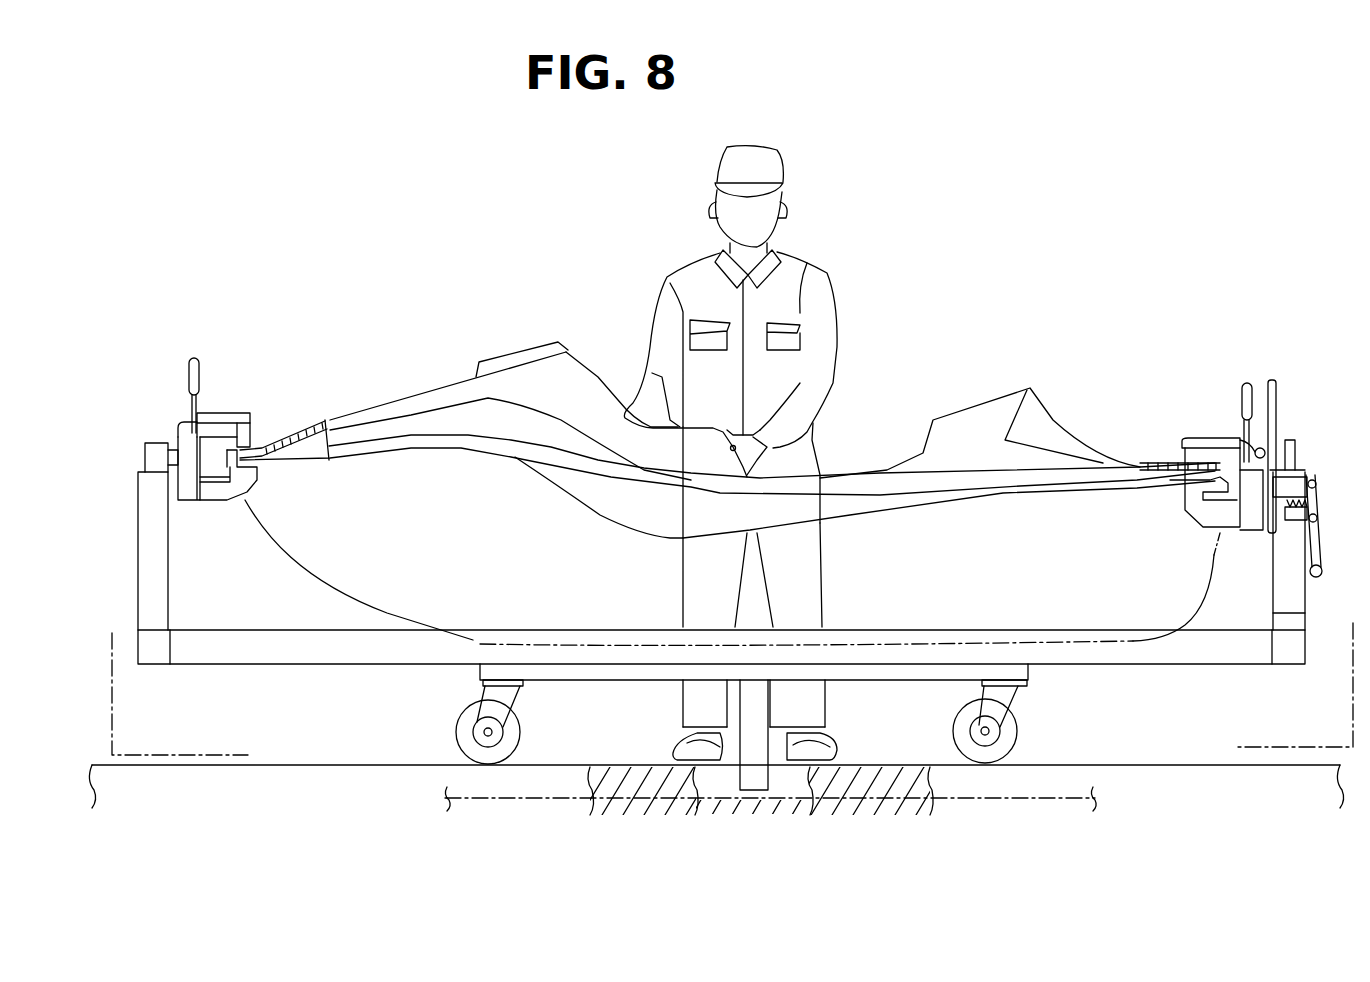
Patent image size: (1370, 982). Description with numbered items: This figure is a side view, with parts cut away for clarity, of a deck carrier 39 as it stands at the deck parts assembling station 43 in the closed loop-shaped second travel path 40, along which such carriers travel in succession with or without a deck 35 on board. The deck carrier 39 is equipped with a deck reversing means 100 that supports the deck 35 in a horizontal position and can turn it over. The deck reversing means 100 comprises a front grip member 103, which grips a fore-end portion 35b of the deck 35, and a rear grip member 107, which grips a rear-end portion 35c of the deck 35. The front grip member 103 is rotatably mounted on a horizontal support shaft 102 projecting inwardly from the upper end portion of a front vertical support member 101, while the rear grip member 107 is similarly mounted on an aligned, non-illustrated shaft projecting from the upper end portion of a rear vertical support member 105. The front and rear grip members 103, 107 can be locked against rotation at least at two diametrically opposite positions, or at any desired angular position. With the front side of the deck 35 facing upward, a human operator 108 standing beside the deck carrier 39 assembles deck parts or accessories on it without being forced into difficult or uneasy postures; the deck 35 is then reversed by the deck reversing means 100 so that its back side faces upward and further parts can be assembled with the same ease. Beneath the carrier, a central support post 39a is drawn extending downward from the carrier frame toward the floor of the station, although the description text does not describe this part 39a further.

The deck 35 is at (538, 333).
The fore-end portion of the deck 35b is at (270, 436).
The rear-end portion of the deck 35c is at (1182, 455).
The deck carrier 39 is at (360, 650).
The support post 39a is at (753, 792).
The second travel path 40 is at (700, 774).
The deck parts assembling station 43 is at (120, 712).
The deck reversing means 100 is at (270, 343).
The front vertical support member 101 is at (143, 513).
The horizontal support shaft 102 is at (172, 443).
The front grip member 103 is at (230, 410).
The rear vertical support member 105 is at (1293, 557).
The rear grip member 107 is at (1217, 436).
The human operator 108 is at (807, 273).